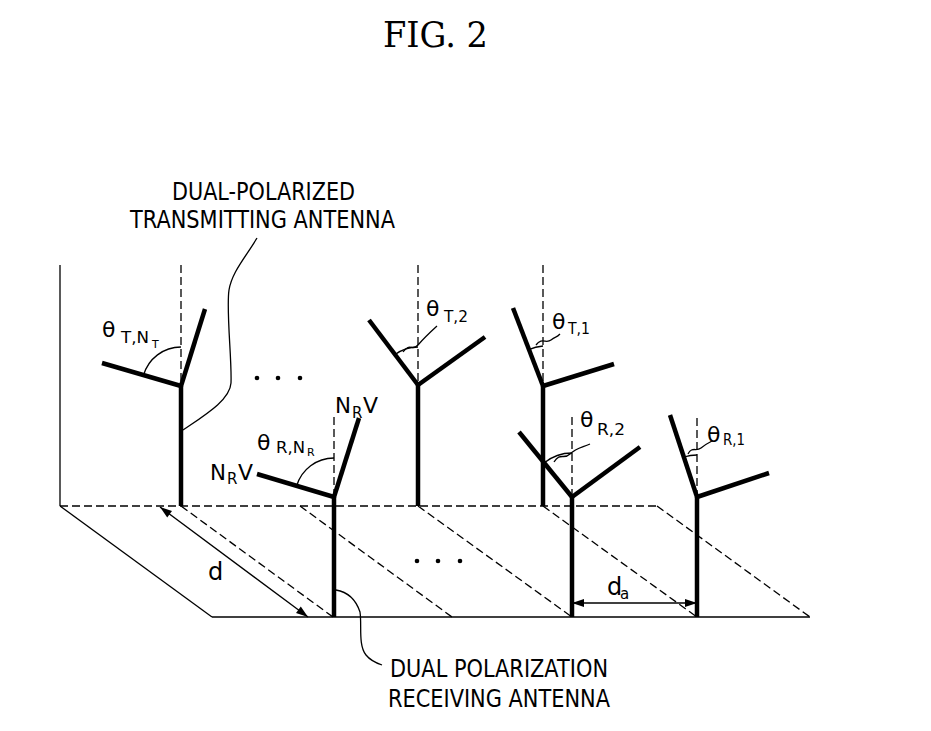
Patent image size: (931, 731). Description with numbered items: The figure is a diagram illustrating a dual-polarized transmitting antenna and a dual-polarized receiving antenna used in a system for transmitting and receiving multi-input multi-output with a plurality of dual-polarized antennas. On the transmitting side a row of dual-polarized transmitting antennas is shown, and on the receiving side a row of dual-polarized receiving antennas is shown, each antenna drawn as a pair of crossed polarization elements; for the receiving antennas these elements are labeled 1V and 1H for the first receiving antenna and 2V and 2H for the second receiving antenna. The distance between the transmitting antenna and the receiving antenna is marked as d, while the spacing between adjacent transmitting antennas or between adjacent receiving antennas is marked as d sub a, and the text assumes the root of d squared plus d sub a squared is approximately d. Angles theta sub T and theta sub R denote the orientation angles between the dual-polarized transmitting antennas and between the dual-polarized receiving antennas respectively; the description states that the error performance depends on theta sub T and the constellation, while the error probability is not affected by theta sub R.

The vertical polarization element of first receiving antenna 1V is at (677, 447).
The horizontal polarization element of first receiving antenna 1H is at (745, 478).
The vertical polarization element of second receiving antenna 2V is at (539, 454).
The horizontal polarization element of second receiving antenna 2H is at (614, 460).